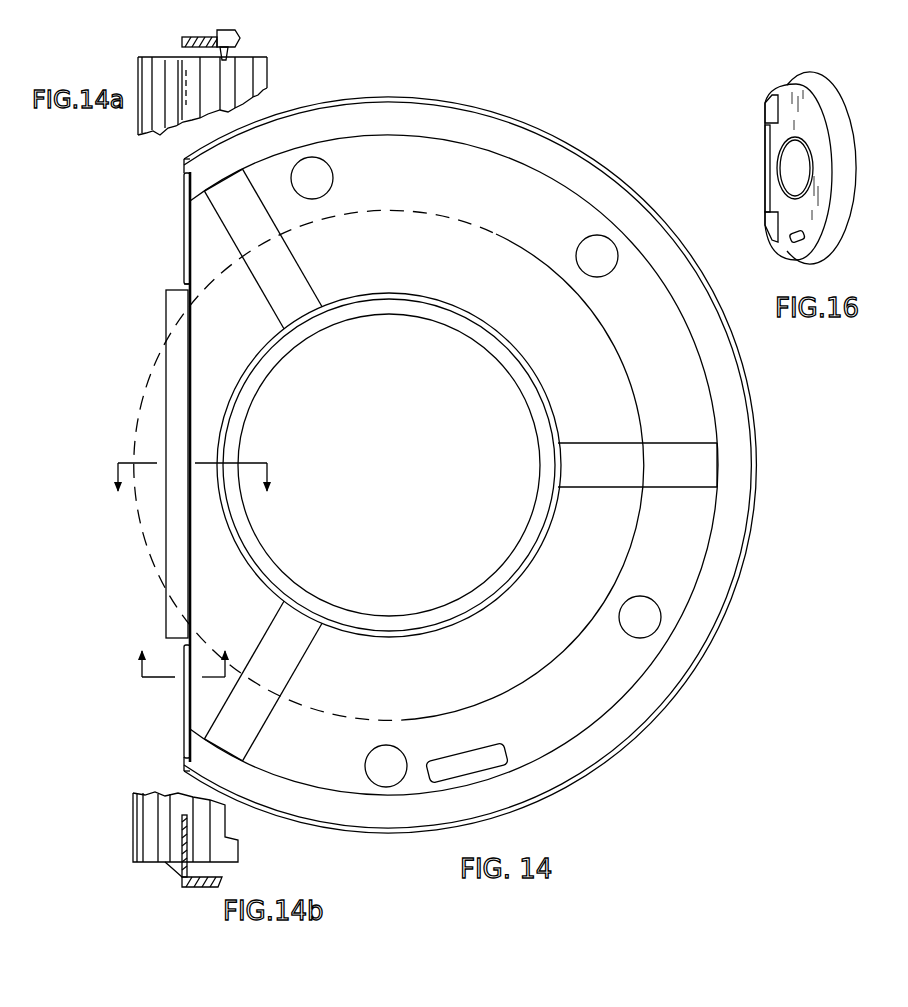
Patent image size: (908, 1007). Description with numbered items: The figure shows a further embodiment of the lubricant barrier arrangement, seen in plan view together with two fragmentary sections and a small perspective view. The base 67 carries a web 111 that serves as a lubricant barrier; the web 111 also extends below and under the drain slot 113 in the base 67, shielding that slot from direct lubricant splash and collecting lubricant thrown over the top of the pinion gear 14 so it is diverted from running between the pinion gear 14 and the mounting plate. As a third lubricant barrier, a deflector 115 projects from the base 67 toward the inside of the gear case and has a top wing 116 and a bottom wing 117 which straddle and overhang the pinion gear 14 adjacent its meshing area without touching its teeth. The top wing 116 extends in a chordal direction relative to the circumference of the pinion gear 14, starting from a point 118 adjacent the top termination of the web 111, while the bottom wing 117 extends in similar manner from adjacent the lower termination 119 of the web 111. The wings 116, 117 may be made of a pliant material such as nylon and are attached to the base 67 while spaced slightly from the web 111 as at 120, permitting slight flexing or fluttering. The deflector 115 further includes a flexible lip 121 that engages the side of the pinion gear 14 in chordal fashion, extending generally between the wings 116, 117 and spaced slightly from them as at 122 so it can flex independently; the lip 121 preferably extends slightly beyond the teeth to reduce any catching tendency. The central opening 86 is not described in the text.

In FIG. 14, the pinion gear 14 is at (510, 239).
In FIG. 14, the web 111 is at (446, 117).
In FIG. 16, the web 111 is at (846, 136).
In FIG. 14, the central opening 86 is at (495, 344).
In FIG. 14A, the central opening 86 is at (233, 56).
In FIG. 14, the base 67 is at (616, 540).
In FIG. 14, the drain slot 113 is at (504, 742).
In FIG. 14, the deflector 115 is at (177, 235).
In FIG. 14, the top wing 116 is at (192, 252).
In FIG. 16, the top wing 116 is at (768, 112).
In FIG. 14, the bottom wing 117 is at (188, 700).
In FIG. 16, the bottom wing 117 is at (770, 228).
In FIG. 14, the point adjacent top termination of the web 118 is at (183, 165).
In FIG. 14, the lower termination of the web 119 is at (181, 768).
In FIG. 14, the spacing between wings and web 120 is at (181, 170).
In FIG. 14, the flexible lip 121 is at (170, 352).
In FIG. 14A, the flexible lip 121 is at (173, 53).
In FIG. 14B, the flexible lip 121 is at (172, 879).
In FIG. 16, the flexible lip 121 is at (766, 173).
In FIG. 14, the spacing between lip and wings 122 is at (182, 286).